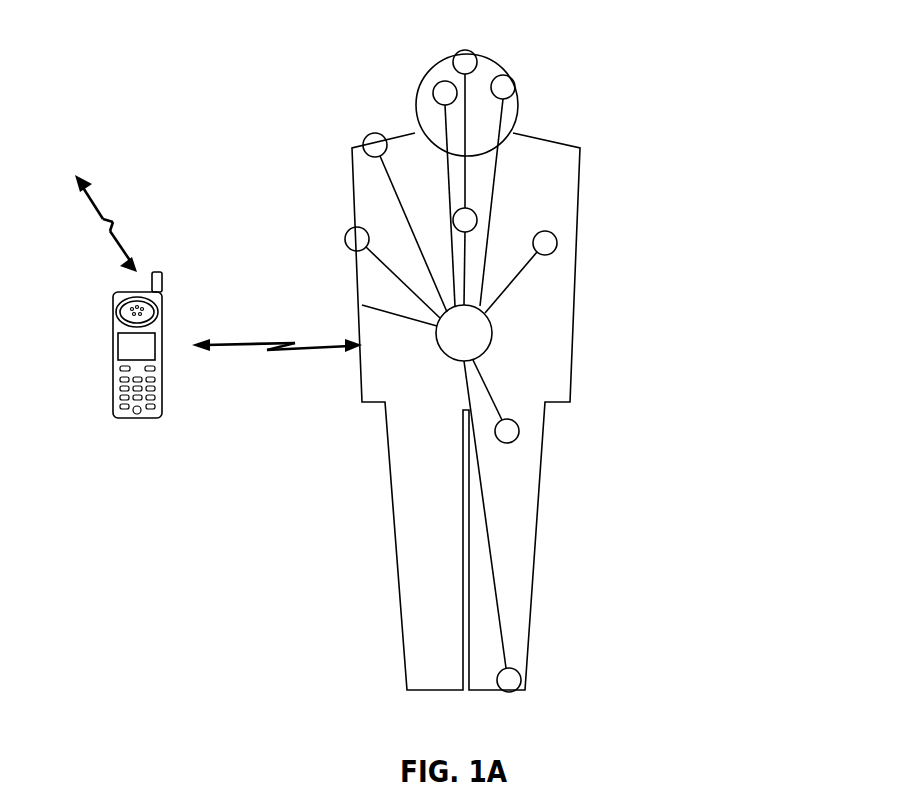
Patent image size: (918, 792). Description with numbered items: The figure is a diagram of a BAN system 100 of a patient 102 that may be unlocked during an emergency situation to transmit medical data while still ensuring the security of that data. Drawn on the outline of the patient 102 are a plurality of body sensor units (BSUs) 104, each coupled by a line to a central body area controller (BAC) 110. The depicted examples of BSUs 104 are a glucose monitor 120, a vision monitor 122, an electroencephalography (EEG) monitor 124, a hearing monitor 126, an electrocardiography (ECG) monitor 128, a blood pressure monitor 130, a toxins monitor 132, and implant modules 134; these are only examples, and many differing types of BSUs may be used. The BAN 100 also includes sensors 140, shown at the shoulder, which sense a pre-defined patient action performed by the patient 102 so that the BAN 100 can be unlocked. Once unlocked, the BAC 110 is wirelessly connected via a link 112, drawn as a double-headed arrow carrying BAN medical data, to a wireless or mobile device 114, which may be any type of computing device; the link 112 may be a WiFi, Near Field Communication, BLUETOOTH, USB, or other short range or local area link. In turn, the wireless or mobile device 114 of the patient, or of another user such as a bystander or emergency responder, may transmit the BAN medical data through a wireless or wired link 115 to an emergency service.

The BAN system 100 is at (336, 38).
The patient 102 is at (572, 325).
The body sensor units 104 is at (525, 52).
The body area controller 110 is at (492, 332).
The link 112 is at (277, 342).
The wireless or mobile device 114 is at (137, 389).
The wireless or wired link 115 is at (105, 238).
The glucose monitor 120 is at (295, 230).
The vision monitor 122 is at (387, 93).
The electroencephalography (EEG) monitor 124 is at (466, 52).
The hearing monitor 126 is at (575, 87).
The electrocardiography (ECG) monitor 128 is at (473, 213).
The blood pressure monitor 130 is at (664, 243).
The toxins monitor 132 is at (575, 436).
The implant modules 134 is at (579, 687).
The sensors 140 is at (309, 144).